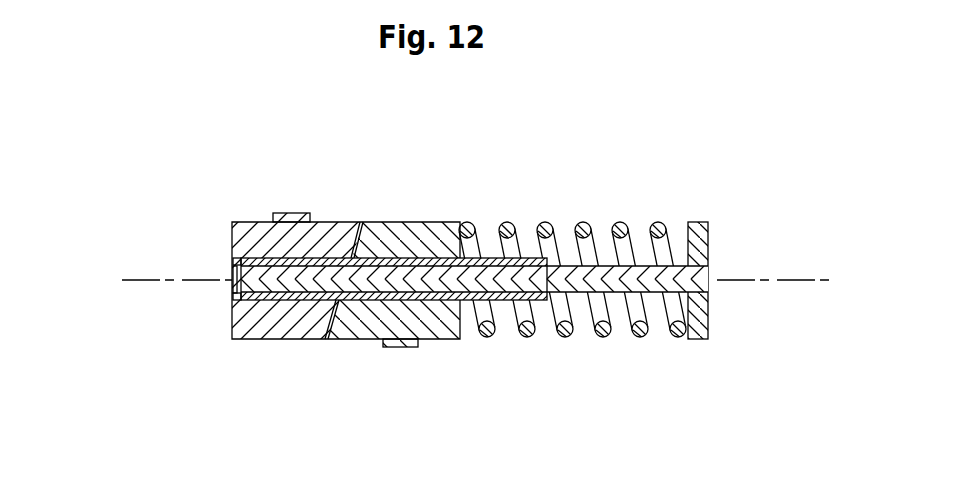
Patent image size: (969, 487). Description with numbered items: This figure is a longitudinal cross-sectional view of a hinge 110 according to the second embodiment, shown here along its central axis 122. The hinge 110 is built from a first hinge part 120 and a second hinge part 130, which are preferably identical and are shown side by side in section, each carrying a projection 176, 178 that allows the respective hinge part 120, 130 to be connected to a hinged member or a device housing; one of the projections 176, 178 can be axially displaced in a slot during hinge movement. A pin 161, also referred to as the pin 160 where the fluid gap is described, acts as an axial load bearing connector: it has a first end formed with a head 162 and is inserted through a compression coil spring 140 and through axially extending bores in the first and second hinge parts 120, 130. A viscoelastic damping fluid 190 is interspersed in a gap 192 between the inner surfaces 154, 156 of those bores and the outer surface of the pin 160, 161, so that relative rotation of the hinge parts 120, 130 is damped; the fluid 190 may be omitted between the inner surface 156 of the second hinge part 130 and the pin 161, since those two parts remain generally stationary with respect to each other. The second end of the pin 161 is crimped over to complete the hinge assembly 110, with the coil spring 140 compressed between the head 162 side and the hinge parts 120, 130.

The hinge 110 is at (570, 125).
The first hinge part 120 is at (367, 340).
The second hinge part 130 is at (253, 340).
The inner surface 154 is at (417, 252).
The inner surface 156 is at (283, 257).
The projection 176 is at (403, 347).
The projection 178 is at (296, 213).
The gap 192 is at (437, 252).
The viscoelastic damping fluid 190 is at (528, 232).
The compression coil spring 140 is at (619, 228).
The pin 161 is at (621, 330).
The pin 160 is at (712, 238).
The head 162 is at (712, 330).
The central axis 122 is at (150, 283).